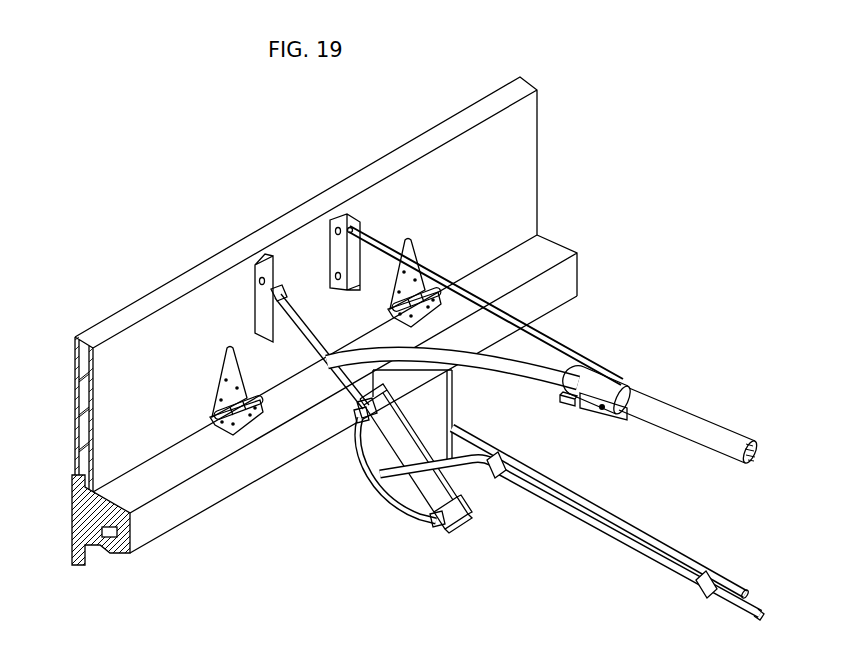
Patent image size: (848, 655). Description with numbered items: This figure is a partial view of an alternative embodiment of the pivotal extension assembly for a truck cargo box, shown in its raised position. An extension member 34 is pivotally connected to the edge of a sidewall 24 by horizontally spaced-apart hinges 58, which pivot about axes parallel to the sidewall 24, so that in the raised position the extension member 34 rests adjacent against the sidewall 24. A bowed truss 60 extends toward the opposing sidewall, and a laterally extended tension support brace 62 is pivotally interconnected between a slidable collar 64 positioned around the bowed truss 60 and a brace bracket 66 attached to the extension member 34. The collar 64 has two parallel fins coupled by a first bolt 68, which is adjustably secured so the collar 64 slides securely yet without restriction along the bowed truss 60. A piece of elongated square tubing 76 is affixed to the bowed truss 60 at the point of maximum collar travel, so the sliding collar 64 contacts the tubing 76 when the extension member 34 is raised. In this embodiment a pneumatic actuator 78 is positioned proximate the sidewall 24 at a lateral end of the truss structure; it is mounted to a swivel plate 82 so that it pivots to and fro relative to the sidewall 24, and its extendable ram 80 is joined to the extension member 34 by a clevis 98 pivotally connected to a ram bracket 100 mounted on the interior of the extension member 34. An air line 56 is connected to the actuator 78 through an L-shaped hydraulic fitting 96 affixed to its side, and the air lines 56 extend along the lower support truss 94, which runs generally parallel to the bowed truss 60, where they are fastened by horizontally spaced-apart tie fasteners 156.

The sidewall 24 is at (72, 478).
The extension member 34 is at (126, 306).
The air line 56 is at (630, 542).
The hinge 58 is at (229, 348).
The bowed truss 60 is at (717, 423).
The tension support brace 62 is at (568, 343).
The slidable collar 64 is at (620, 424).
The brace bracket 66 is at (337, 217).
The first bolt 68 is at (602, 410).
The elongated square tubing 76 is at (570, 399).
The pneumatic actuator 78 is at (392, 453).
The extendable ram 80 is at (330, 368).
The swivel plate 82 is at (468, 523).
The lower support truss 94 is at (662, 544).
The L-shaped hydraulic fitting 96 is at (438, 520).
The clevis 98 is at (276, 290).
The ram bracket 100 is at (262, 283).
The tie fastener 156 is at (712, 580).